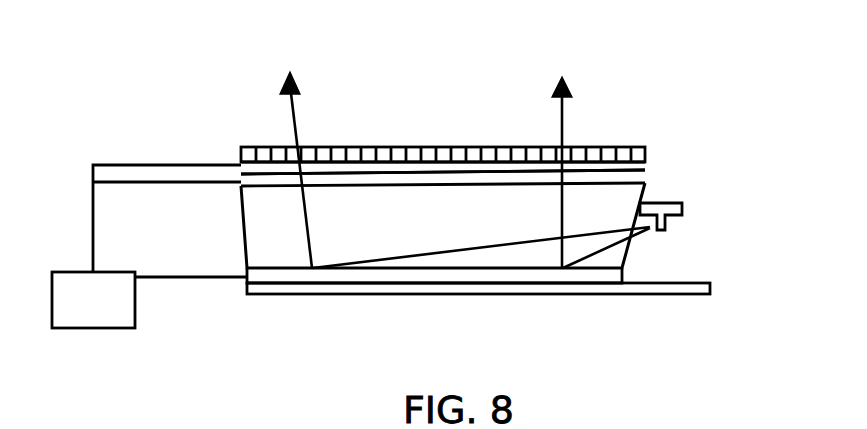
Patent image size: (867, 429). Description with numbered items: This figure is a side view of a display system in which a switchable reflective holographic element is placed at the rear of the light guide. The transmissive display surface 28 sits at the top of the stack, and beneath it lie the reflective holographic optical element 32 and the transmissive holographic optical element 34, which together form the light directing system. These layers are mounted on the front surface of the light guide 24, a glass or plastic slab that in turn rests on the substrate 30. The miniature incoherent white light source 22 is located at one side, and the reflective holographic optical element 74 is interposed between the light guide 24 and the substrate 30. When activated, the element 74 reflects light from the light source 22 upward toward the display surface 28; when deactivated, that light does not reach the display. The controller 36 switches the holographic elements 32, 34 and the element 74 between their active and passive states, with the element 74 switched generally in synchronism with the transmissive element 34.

The miniature incoherent white light source 22 is at (685, 213).
The light guide 24 is at (245, 224).
The transmissive display surface 28 is at (648, 152).
The substrate 30 is at (710, 282).
The reflective holographic optical element 32 is at (647, 167).
The transmissive holographic optical element 34 is at (647, 179).
The controller 36 is at (135, 315).
The reflective holographic optical element 74 is at (527, 273).